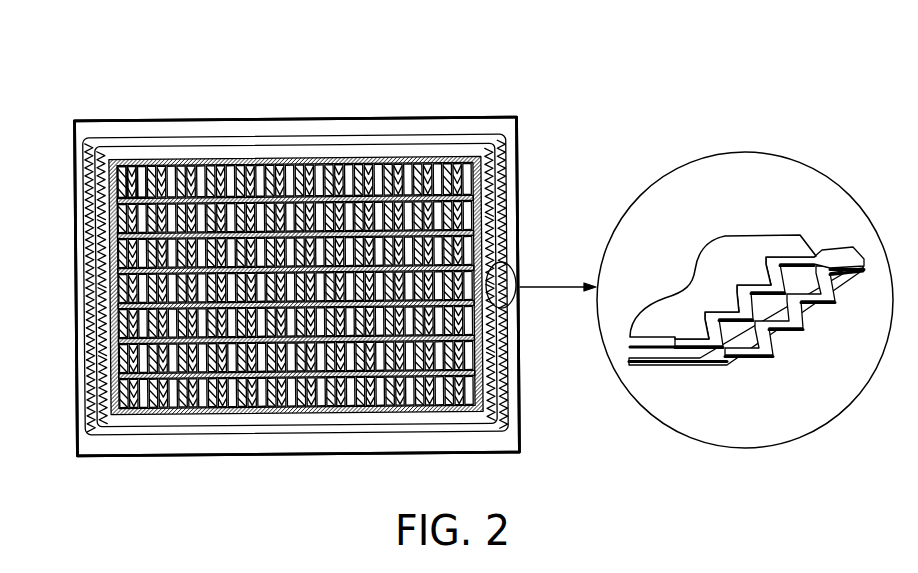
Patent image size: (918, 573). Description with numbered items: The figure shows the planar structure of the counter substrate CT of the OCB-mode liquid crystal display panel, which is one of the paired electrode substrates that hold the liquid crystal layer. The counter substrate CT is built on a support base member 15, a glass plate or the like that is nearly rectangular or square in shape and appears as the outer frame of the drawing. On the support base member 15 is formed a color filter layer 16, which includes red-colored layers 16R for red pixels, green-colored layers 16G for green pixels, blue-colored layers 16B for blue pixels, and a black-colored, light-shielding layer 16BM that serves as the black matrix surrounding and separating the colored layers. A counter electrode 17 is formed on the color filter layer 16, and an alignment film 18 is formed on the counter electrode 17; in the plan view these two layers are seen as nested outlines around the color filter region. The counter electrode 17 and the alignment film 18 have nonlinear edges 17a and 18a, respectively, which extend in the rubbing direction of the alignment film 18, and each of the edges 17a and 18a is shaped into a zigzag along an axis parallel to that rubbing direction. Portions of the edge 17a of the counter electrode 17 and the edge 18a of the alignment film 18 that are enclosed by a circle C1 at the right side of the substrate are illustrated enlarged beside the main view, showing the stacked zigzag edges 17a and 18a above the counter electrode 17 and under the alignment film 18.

The support base member 15 is at (403, 117).
The color filter layer 16 is at (205, 71).
The black-colored layer 16BM is at (111, 163).
The red-colored layer 16R is at (120, 165).
The green-colored layer 16G is at (134, 165).
The blue-colored layer 16B is at (146, 165).
The counter electrode 17 is at (506, 168).
The edge of the counter electrode 17a is at (507, 187).
The alignment film 18 is at (502, 215).
The edge of the alignment film 18a is at (502, 233).
The counter substrate CT is at (486, 99).
The circle C1 is at (510, 303).